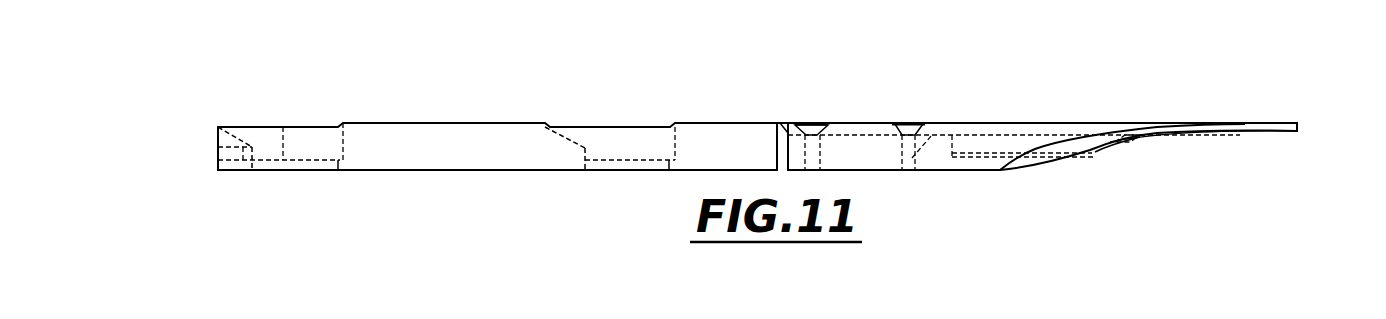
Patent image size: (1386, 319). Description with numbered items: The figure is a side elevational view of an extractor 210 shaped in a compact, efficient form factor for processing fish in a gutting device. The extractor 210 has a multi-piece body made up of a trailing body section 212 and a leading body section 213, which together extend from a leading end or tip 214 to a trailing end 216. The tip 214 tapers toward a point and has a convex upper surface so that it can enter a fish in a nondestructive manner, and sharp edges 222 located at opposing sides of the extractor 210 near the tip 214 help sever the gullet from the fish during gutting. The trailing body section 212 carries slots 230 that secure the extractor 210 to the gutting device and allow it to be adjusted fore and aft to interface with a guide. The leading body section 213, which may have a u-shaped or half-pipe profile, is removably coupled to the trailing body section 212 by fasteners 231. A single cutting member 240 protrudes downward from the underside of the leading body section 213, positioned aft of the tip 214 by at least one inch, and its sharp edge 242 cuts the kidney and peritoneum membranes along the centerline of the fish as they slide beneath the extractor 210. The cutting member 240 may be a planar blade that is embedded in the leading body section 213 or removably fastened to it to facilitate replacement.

The extractor 210 is at (1257, 87).
The trailing body section 212 is at (447, 123).
The leading body section 213 is at (943, 148).
The leading end or tip 214 is at (1294, 126).
The trailing end 216 is at (241, 168).
The sharp edges 222 is at (1030, 166).
The slots 230 is at (282, 125).
The fasteners 231 is at (811, 123).
The cutting member 240 is at (1100, 152).
The sharp edge 242 is at (1094, 153).